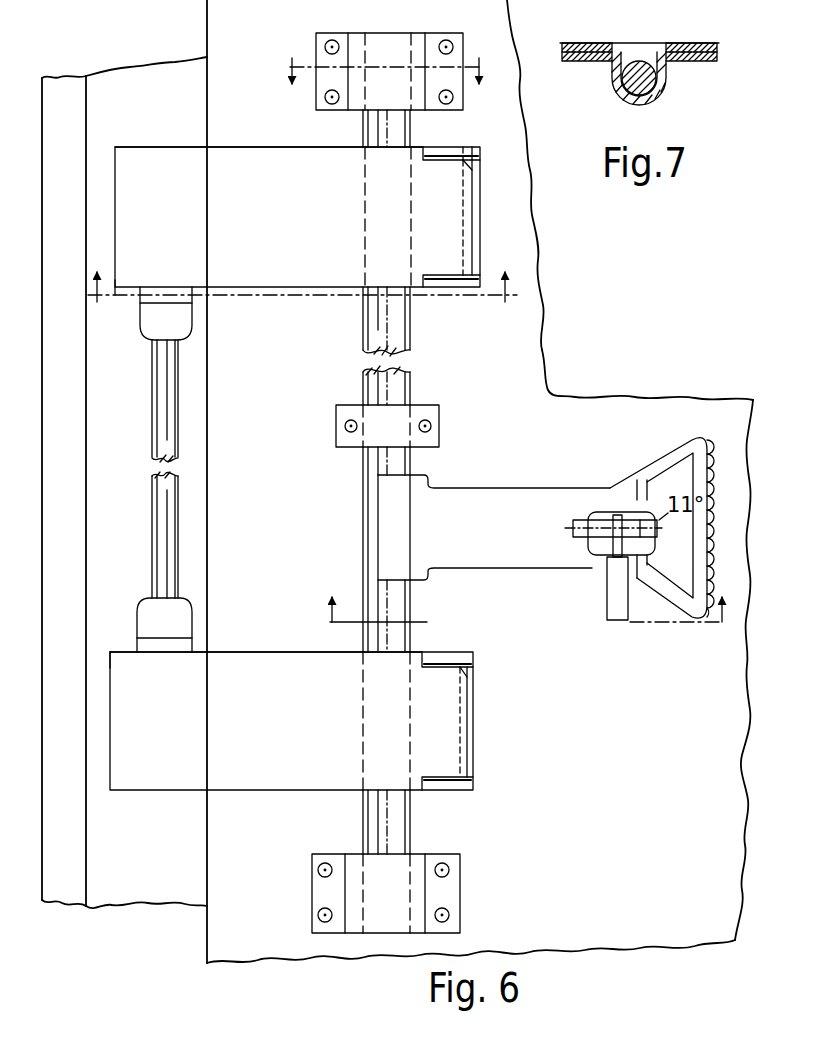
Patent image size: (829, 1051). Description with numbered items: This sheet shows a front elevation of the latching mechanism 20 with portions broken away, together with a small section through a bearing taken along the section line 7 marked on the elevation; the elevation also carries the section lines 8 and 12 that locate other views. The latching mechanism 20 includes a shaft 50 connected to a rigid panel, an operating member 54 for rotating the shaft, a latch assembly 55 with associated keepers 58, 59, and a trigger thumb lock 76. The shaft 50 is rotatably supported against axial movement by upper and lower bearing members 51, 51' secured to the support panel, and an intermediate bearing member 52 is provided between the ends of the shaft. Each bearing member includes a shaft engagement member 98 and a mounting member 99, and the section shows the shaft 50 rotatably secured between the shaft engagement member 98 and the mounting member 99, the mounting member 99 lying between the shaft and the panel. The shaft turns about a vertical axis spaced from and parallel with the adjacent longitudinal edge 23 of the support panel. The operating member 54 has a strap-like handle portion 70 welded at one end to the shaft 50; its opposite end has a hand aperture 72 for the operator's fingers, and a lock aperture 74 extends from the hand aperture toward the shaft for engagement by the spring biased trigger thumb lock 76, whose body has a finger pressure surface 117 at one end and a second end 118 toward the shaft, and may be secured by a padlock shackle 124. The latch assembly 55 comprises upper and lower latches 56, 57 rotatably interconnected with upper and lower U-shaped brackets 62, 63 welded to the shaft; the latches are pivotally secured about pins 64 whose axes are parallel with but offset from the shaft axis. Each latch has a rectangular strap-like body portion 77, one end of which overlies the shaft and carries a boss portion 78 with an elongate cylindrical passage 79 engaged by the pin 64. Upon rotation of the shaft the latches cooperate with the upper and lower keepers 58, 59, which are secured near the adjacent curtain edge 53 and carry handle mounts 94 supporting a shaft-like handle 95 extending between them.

In FIG. 6, the latching mechanism 20 is at (166, 46).
In FIG. 6, the longitudinal edge 23 is at (207, 868).
In FIG. 6, the curtain edge 53 is at (212, 60).
In FIG. 6, the shaft 50 is at (402, 338).
In FIG. 7, the shaft 50 is at (650, 97).
In FIG. 6, the upper bearing member 51 is at (401, 55).
In FIG. 7, the upper bearing member 51 is at (643, 21).
In FIG. 6, the lower bearing member 51' is at (428, 891).
In FIG. 6, the intermediate bearing member 52 is at (436, 416).
In FIG. 6, the operating member 54 is at (553, 595).
In FIG. 6, the latch assembly 55 is at (514, 190).
In FIG. 6, the upper latch 56 is at (172, 137).
In FIG. 6, the lower latch 57 is at (267, 803).
In FIG. 6, the upper keeper 58 is at (128, 295).
In FIG. 6, the lower keeper 59 is at (107, 652).
In FIG. 6, the upper U-shaped bracket 62 is at (437, 151).
In FIG. 6, the lower U-shaped bracket 63 is at (437, 790).
In FIG. 6, the pin 64 is at (472, 151).
In FIG. 6, the handle portion 70 is at (503, 497).
In FIG. 6, the hand aperture 72 is at (677, 478).
In FIG. 6, the lock aperture 74 is at (592, 563).
In FIG. 6, the trigger thumb lock 76 is at (627, 488).
In FIG. 6, the body portion 77 is at (258, 162).
In FIG. 6, the boss portion 78 is at (482, 225).
In FIG. 6, the elongate cylindrical passage 79 is at (474, 169).
In FIG. 6, the handle mount 94 is at (183, 325).
In FIG. 6, the handle 95 is at (172, 381).
In FIG. 7, the shaft engagement member 98 is at (693, 62).
In FIG. 7, the mounting member 99 is at (703, 45).
In FIG. 6, the finger pressure surface 117 is at (650, 530).
In FIG. 6, the second end 118 is at (573, 530).
In FIG. 6, the padlock shackle 124 is at (612, 522).
In FIG. 6, the section line 7 is at (388, 81).
In FIG. 6, the section line 8 is at (527, 594).
In FIG. 6, the section line 12 is at (306, 273).